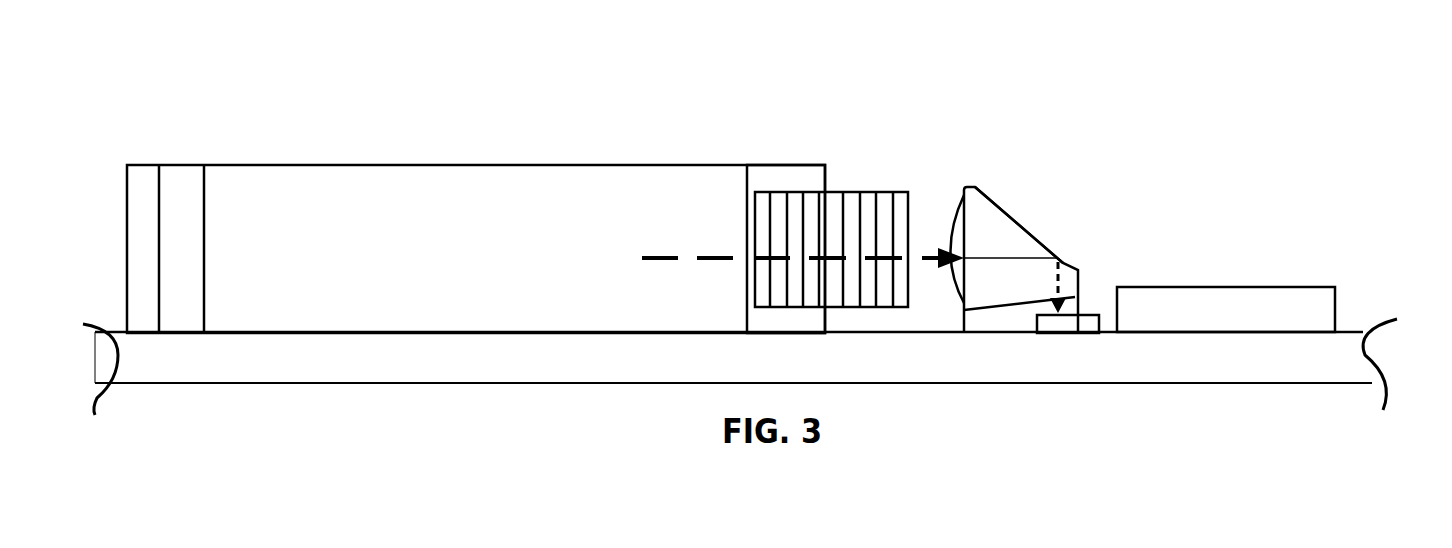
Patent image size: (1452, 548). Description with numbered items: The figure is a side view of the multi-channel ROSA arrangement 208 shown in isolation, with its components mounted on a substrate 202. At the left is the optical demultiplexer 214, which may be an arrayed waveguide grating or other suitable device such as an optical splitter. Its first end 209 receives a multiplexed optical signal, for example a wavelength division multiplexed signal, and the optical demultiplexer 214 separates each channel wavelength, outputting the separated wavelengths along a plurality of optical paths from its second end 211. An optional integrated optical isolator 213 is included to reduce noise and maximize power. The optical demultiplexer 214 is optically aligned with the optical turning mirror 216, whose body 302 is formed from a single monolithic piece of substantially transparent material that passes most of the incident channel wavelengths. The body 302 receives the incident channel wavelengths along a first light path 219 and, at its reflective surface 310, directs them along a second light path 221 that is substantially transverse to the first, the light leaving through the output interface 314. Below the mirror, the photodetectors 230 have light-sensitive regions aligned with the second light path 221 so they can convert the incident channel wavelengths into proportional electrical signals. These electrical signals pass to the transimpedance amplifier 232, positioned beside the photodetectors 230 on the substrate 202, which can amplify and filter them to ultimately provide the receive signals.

The substrate 202 is at (510, 360).
The multi-channel ROSA arrangement 208 is at (280, 88).
The first end 209 is at (125, 147).
The second end 211 is at (805, 137).
The optical isolator 213 is at (865, 170).
The optical demultiplexer 214 is at (550, 267).
The optical turning mirror 216 is at (995, 210).
The first light path 219 is at (658, 257).
The second light path 221 is at (1059, 258).
The photodetectors 230 is at (1087, 313).
The transimpedance amplifier 232 is at (1337, 308).
The body 302 is at (962, 301).
The reflective surface 310 is at (1030, 235).
The output interface 314 is at (1010, 310).